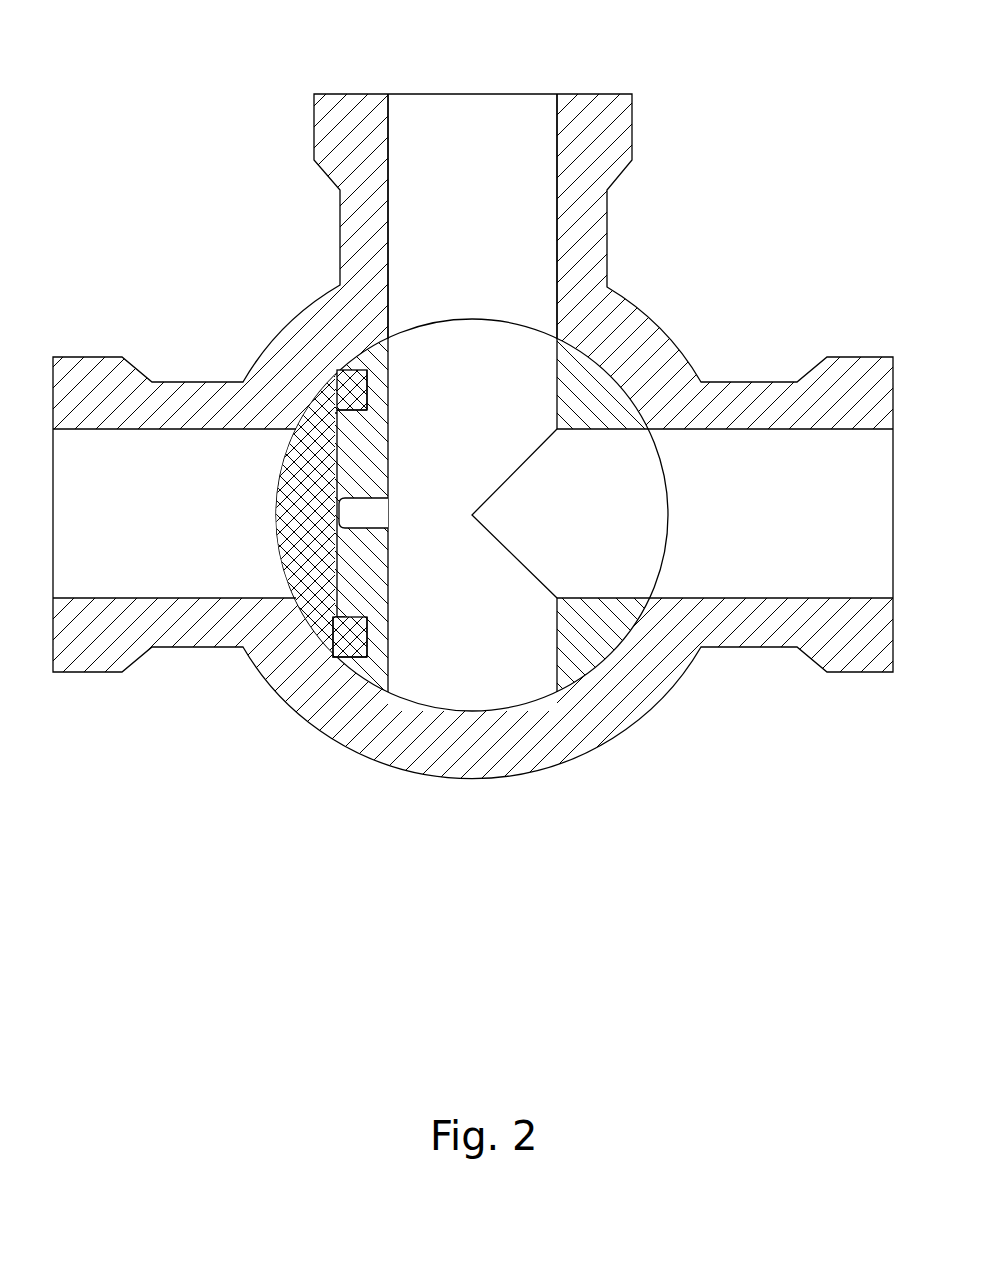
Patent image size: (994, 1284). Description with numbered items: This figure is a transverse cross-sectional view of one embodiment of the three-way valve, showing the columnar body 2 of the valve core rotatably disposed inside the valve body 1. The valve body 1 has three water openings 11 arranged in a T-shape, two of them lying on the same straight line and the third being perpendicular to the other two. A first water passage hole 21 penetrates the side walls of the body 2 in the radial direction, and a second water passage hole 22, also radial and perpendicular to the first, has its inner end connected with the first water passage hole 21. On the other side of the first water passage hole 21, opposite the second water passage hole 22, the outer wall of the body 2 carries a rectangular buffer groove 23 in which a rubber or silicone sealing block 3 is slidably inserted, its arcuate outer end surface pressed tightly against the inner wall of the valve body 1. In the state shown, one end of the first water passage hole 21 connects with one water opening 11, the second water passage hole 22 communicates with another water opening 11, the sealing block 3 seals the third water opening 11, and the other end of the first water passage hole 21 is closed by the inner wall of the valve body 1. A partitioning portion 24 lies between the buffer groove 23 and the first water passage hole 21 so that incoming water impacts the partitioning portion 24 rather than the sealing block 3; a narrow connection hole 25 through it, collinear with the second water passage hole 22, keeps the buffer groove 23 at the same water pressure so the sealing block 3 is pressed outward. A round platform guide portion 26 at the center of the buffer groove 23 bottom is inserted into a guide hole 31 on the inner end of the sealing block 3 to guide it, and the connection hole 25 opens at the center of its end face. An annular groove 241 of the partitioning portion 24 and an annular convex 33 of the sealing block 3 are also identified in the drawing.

The valve body 1 is at (633, 345).
The body 2 is at (583, 630).
The sealing block 3 is at (307, 527).
The water opening 11 is at (507, 222).
The first water passage hole 21 is at (452, 378).
The second water passage hole 22 is at (615, 523).
The buffer groove 23 is at (362, 658).
The partitioning portion 24 is at (385, 637).
The annular groove 241 is at (355, 393).
The connection hole 25 is at (363, 513).
The guide portion 26 is at (345, 592).
The guide hole 31 is at (338, 372).
The annular convex 33 is at (343, 395).